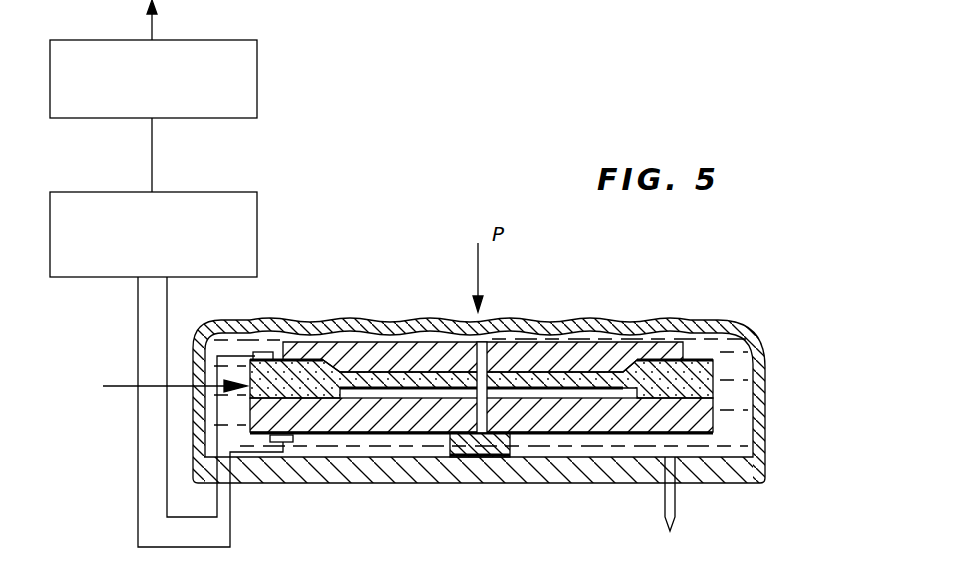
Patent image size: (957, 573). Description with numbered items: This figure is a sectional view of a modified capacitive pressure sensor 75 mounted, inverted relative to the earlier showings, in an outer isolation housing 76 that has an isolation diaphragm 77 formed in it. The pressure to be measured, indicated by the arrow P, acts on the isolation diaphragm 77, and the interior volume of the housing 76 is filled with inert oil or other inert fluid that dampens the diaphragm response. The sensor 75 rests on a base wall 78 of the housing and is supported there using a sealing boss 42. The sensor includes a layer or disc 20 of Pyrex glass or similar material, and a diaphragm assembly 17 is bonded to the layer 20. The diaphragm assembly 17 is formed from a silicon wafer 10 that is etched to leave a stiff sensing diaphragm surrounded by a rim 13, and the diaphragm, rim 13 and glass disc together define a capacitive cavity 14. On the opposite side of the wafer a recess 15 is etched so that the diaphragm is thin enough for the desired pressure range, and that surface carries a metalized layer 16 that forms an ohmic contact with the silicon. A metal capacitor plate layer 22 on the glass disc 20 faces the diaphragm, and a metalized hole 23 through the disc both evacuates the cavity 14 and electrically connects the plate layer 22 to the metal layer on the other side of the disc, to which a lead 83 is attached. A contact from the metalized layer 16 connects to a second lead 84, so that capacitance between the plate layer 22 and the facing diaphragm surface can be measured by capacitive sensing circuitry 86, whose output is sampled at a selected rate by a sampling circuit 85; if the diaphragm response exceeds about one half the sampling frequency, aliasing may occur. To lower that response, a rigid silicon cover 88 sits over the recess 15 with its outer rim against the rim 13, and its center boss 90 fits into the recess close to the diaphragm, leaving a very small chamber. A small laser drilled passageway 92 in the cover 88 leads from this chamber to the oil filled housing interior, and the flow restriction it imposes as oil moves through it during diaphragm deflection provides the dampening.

The silicon wafer 10 is at (537, 388).
The rim portion 13 is at (304, 377).
The cavity 14 is at (379, 389).
The recess 15 is at (359, 357).
The metalized layer 16 is at (279, 357).
The diaphragm assembly 17 is at (159, 385).
The dielectric disc 20 is at (714, 419).
The metal capacitor plate layer portion 22 is at (573, 392).
The hole 23 is at (478, 455).
The sealing boss 42 is at (511, 443).
The sensor 75 is at (729, 325).
The outer housing 76 is at (767, 418).
The isolation diaphragm 77 is at (521, 326).
The base wall 78 is at (628, 470).
The lead 83 is at (181, 548).
The lead 84 is at (203, 513).
The sampling circuit 85 is at (107, 40).
The capacitive sensing circuitry 86 is at (83, 280).
The cover 88 is at (553, 343).
The boss 90 is at (682, 346).
The passageway 92 is at (484, 364).